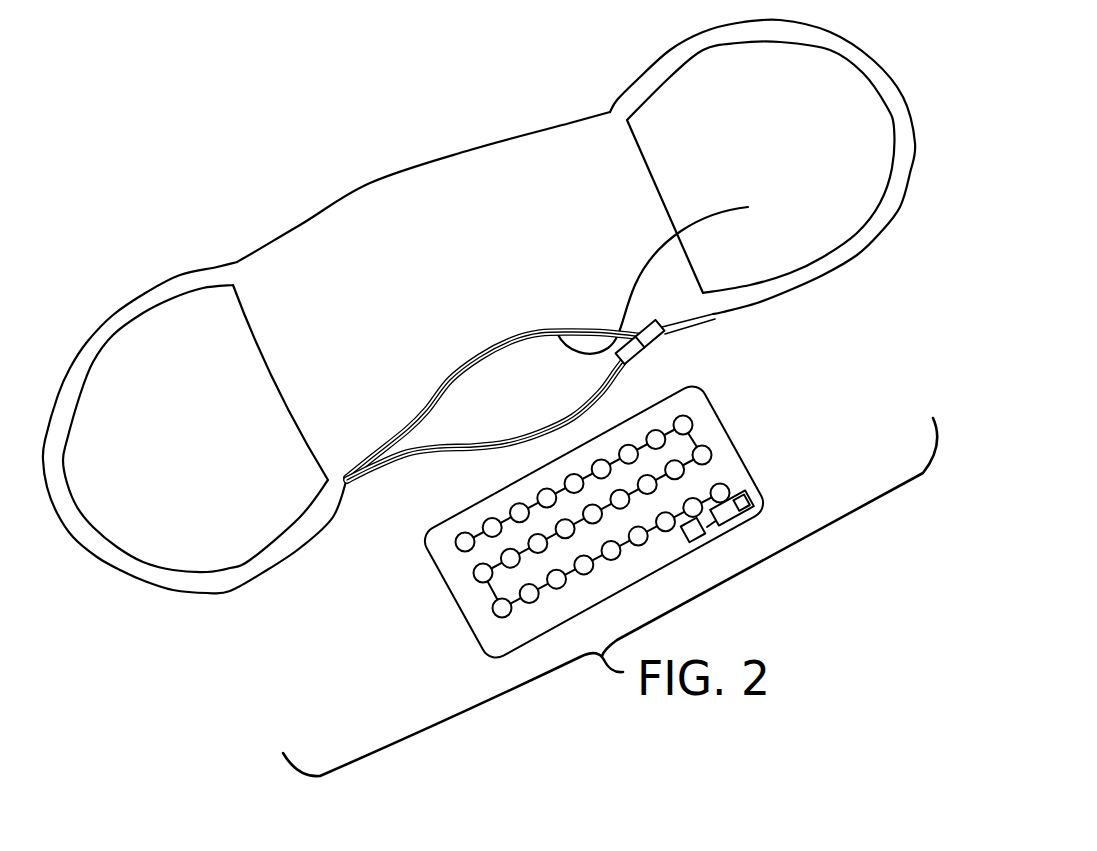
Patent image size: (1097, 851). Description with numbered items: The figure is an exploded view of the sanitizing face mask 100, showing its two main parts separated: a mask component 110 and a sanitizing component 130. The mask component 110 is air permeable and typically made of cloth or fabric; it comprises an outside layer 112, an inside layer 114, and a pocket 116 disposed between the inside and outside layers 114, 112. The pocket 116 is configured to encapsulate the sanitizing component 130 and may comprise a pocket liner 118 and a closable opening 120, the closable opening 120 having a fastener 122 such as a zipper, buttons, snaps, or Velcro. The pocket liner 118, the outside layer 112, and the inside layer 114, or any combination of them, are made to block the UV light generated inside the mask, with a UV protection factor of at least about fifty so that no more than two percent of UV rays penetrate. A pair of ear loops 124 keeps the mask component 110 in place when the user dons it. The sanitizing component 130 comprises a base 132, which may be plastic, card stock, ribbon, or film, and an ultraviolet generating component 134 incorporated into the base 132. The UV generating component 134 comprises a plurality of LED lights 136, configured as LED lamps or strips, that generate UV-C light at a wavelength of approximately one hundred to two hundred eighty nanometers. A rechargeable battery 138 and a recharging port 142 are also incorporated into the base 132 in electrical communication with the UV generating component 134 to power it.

The sanitizing face mask 100 is at (479, 307).
The mask component 110 is at (415, 130).
The outside layer 112 is at (620, 218).
The inside layer 114 is at (736, 187).
The pocket 116 is at (443, 420).
The pocket liner 118 is at (495, 431).
The closable opening 120 is at (465, 460).
The fastener 122 is at (657, 342).
The ear loops 124 is at (675, 530).
The sanitizing component 130 is at (650, 331).
The base 132 is at (745, 468).
The ultraviolet (UV) generating component 134 is at (430, 547).
The light emitting diode (LED) lights 136 is at (492, 614).
The rechargeable battery 138 is at (753, 492).
The recharging port 142 is at (742, 530).